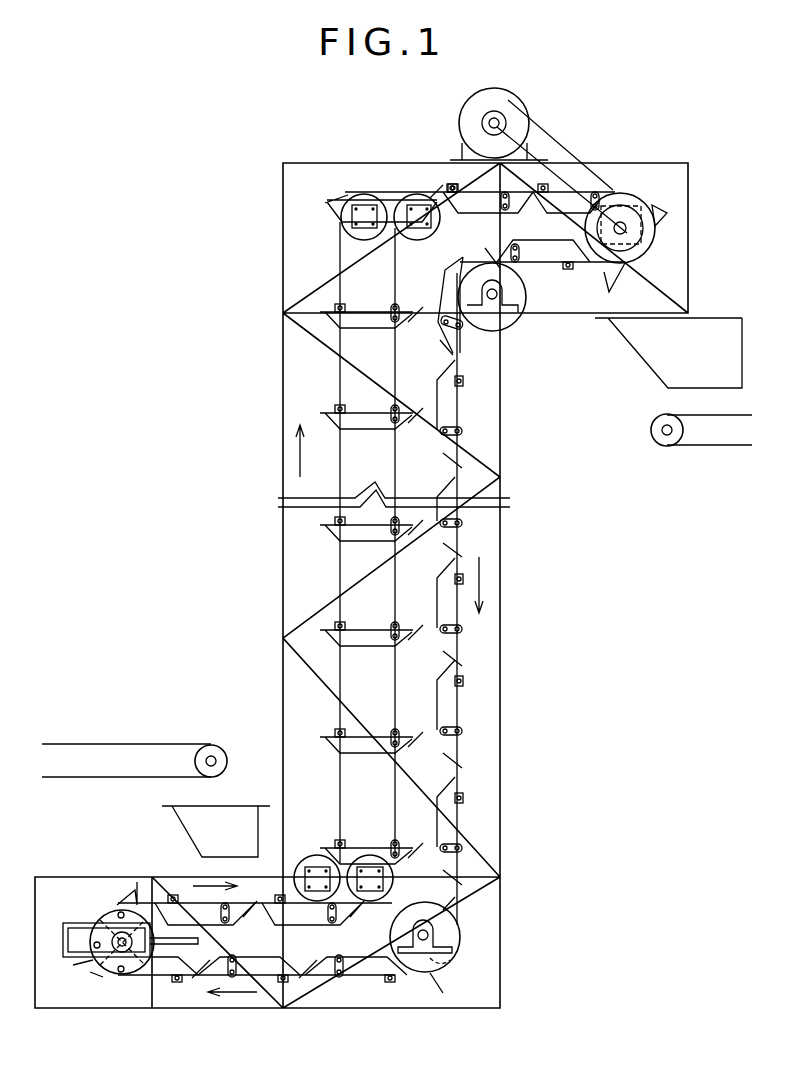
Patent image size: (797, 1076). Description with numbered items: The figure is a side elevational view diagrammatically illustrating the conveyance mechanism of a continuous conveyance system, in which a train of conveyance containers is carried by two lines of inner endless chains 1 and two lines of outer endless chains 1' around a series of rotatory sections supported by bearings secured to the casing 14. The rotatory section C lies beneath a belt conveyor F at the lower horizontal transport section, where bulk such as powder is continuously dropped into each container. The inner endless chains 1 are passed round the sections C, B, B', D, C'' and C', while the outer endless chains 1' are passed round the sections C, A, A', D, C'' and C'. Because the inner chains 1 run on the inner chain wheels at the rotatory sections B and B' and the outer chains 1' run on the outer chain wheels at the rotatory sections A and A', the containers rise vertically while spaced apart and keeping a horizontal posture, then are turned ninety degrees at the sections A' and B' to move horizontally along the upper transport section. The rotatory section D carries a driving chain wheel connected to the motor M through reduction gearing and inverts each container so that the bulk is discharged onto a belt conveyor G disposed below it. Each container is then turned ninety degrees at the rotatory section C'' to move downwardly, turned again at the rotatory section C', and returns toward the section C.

The inner endless chains 1 is at (411, 542).
The outer endless chains 1' is at (360, 542).
The casing 14 is at (500, 690).
The rotatory section A is at (317, 855).
The rotatory section B is at (370, 855).
The rotatory section A' is at (364, 183).
The rotatory section B' is at (417, 183).
The rotatory section C is at (130, 943).
The rotatory section C' is at (443, 948).
The rotatory section C'' is at (509, 310).
The rotatory section D is at (640, 203).
The motor M is at (525, 101).
The belt conveyor F is at (103, 742).
The belt conveyor G is at (708, 445).